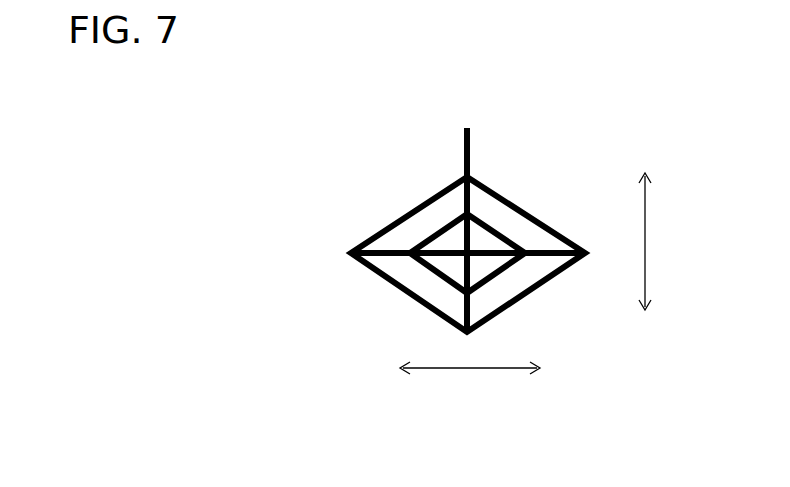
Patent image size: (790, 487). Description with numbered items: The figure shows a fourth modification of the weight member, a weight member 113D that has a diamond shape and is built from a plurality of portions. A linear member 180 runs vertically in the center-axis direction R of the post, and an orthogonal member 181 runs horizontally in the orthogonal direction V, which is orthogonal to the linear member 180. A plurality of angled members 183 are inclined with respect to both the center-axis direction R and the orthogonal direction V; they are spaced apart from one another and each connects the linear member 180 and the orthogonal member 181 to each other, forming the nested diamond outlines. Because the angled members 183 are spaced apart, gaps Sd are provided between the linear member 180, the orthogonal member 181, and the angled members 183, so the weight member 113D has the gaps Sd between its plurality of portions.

The weight member 113D is at (412, 191).
The linear member 180 is at (466, 148).
The orthogonal member 181 is at (351, 253).
The angled members 183 is at (432, 238).
The gaps Sd is at (424, 212).
The center-axis direction R is at (655, 241).
The orthogonal direction V is at (470, 381).